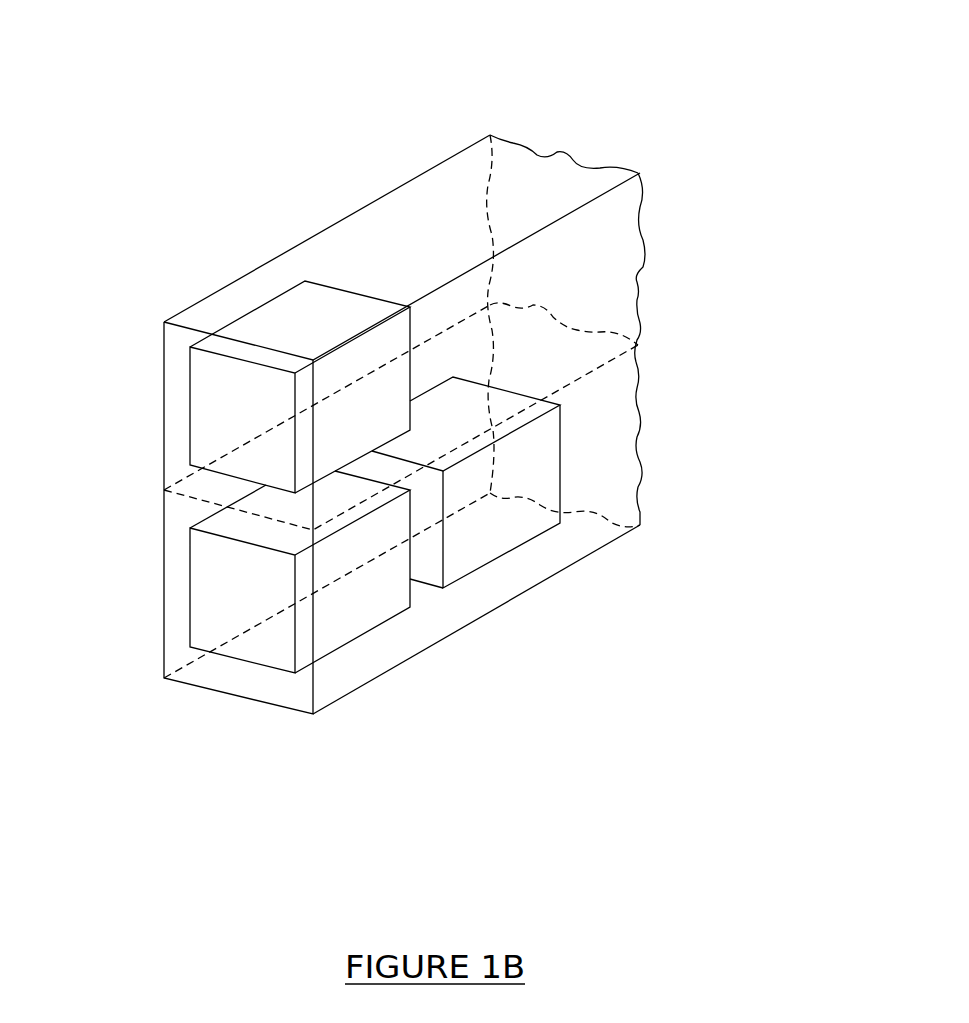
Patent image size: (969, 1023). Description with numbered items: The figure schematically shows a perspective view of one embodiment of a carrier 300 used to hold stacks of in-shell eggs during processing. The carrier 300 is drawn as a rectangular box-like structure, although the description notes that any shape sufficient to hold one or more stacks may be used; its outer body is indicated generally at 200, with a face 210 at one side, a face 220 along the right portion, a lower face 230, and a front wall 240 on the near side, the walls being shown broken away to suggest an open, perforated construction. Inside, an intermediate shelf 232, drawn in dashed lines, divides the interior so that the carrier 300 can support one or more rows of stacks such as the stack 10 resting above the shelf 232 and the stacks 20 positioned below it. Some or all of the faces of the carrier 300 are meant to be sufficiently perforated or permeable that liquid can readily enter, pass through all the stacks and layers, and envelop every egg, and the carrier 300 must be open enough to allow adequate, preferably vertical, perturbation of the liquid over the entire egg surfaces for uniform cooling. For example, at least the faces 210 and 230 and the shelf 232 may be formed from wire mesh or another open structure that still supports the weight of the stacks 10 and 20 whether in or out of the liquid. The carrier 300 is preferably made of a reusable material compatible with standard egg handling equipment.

The carrier 300 is at (274, 184).
The housing frame 200 is at (395, 190).
The face 210 is at (527, 177).
The side wall 220 is at (607, 240).
The face 230 is at (573, 550).
The shelf 232 is at (583, 353).
The front wall 240 is at (297, 694).
The stack 10 is at (220, 407).
The stack 20 is at (228, 590).